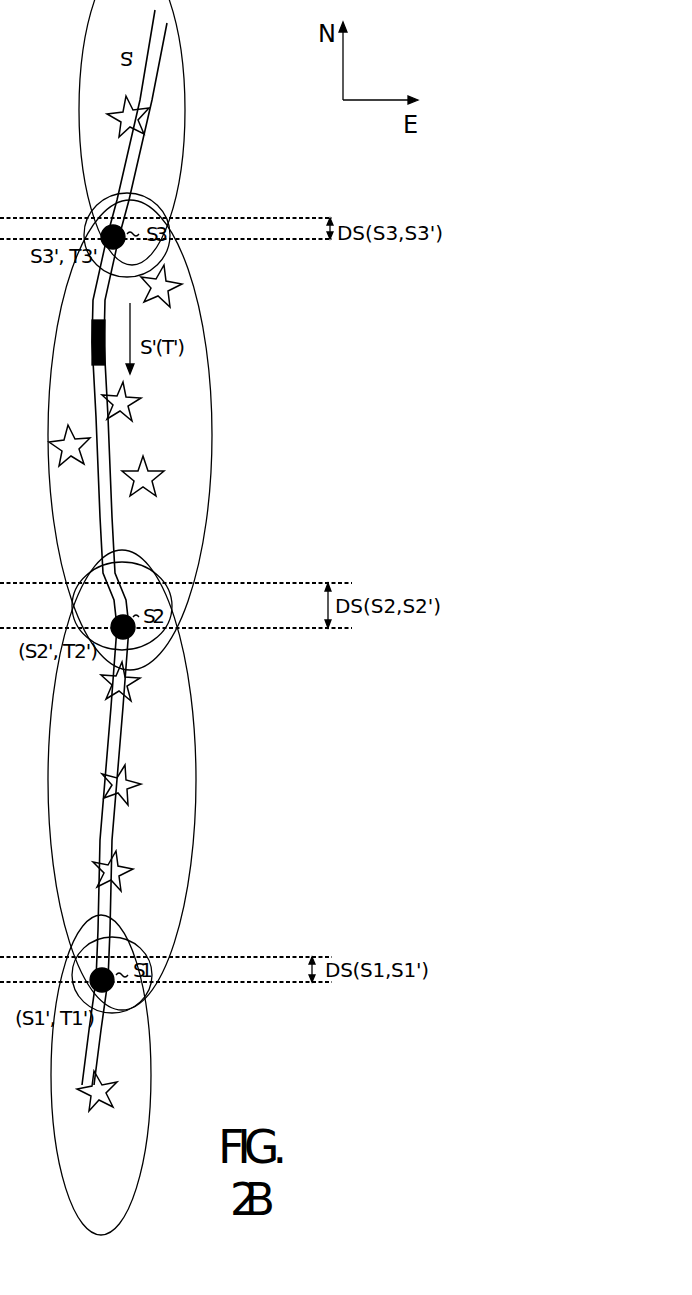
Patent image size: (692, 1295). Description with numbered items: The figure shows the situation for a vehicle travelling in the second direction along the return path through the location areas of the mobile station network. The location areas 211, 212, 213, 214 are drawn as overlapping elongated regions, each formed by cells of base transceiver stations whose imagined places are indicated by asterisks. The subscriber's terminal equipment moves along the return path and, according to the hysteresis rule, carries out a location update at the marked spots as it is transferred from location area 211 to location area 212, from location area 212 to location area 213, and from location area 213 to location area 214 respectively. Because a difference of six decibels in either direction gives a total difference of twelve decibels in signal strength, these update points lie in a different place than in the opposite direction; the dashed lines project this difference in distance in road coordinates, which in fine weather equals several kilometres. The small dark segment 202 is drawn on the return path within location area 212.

The location area 211 is at (82, 64).
The location area 212 is at (57, 512).
The location area 213 is at (52, 745).
The location area 214 is at (60, 1050).
The satellite track segment 202 is at (92, 340).